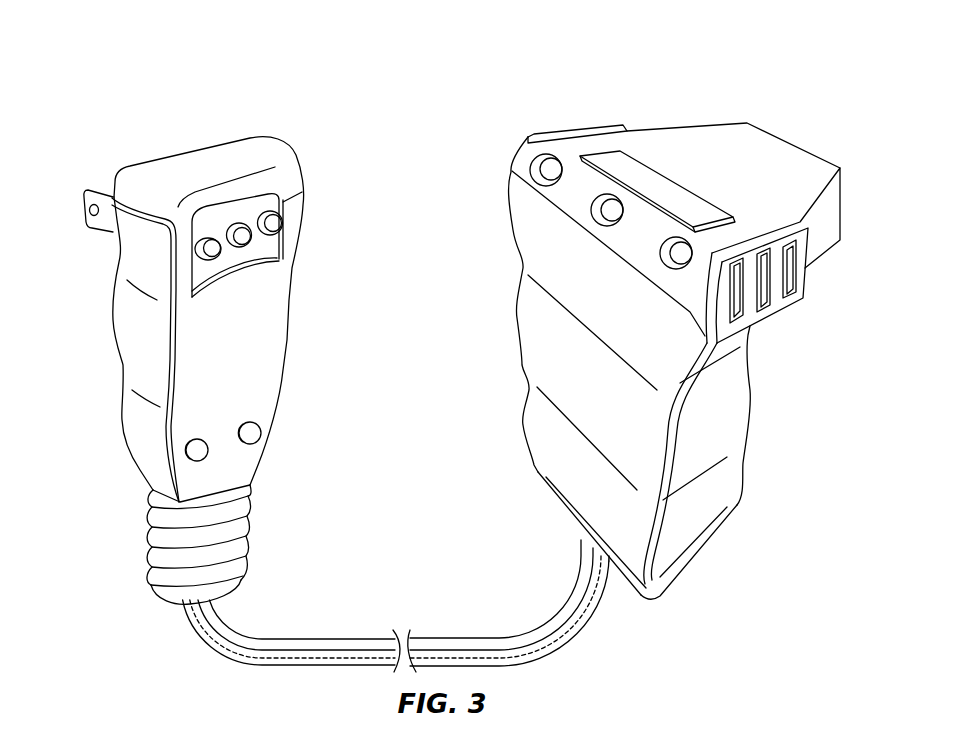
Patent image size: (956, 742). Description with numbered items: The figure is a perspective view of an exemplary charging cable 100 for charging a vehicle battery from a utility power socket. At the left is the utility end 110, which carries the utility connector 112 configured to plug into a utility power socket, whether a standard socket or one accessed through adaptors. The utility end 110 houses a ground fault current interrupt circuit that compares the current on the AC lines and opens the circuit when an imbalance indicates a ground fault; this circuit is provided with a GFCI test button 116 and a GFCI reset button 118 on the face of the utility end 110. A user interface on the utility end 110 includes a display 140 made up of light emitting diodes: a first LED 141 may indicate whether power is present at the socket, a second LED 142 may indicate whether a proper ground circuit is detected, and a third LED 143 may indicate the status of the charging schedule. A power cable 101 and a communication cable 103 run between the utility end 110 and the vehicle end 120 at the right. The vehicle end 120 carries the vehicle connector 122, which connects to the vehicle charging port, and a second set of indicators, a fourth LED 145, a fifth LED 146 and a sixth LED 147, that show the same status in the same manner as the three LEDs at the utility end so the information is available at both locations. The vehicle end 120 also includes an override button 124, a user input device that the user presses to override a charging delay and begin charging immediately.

The charging cable 100 is at (352, 62).
The power cable 101 is at (316, 650).
The communication cable 103 is at (444, 655).
The utility end 110 is at (243, 153).
The utility connector 112 is at (95, 188).
The GFCI test button 116 is at (263, 436).
The GFCI reset button 118 is at (185, 453).
The vehicle end 120 is at (566, 145).
The vehicle connector 122 is at (767, 157).
The override button 124 is at (633, 170).
The display 140 is at (272, 208).
The first LED 141 is at (223, 257).
The second LED 142 is at (251, 244).
The third LED 143 is at (284, 228).
The fourth LED 145 is at (532, 172).
The fifth LED 146 is at (600, 220).
The sixth LED 147 is at (665, 267).